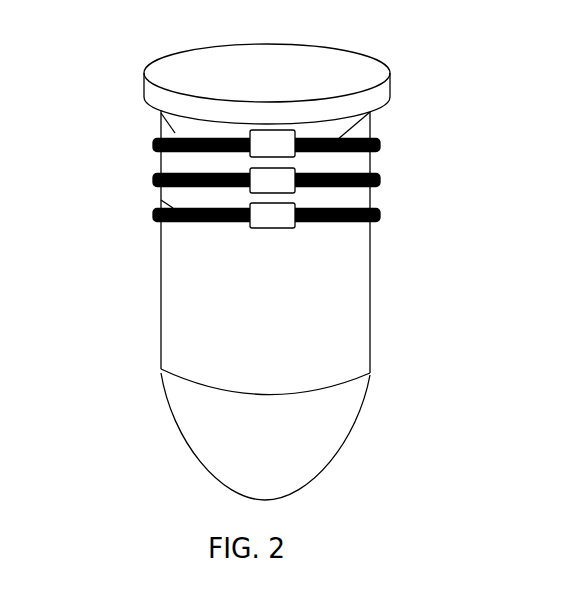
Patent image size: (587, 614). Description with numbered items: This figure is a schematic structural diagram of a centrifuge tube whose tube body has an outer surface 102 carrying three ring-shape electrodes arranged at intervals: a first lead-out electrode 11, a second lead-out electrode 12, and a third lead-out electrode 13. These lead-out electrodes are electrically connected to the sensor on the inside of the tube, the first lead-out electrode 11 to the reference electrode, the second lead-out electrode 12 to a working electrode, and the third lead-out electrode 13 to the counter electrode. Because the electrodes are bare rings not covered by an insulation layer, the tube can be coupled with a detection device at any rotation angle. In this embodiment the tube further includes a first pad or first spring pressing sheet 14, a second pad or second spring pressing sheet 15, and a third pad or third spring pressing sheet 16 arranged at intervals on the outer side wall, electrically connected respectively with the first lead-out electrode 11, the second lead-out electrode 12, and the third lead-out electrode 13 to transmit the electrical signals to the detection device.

The first lead-out electrode 11 is at (155, 147).
The second lead-out electrode 12 is at (155, 177).
The third lead-out electrode 13 is at (155, 213).
The first pad or first spring pressing sheet 14 is at (287, 130).
The second pad or second spring pressing sheet 15 is at (273, 178).
The third pad or third spring pressing sheet 16 is at (273, 217).
The outer surface 102 is at (218, 315).